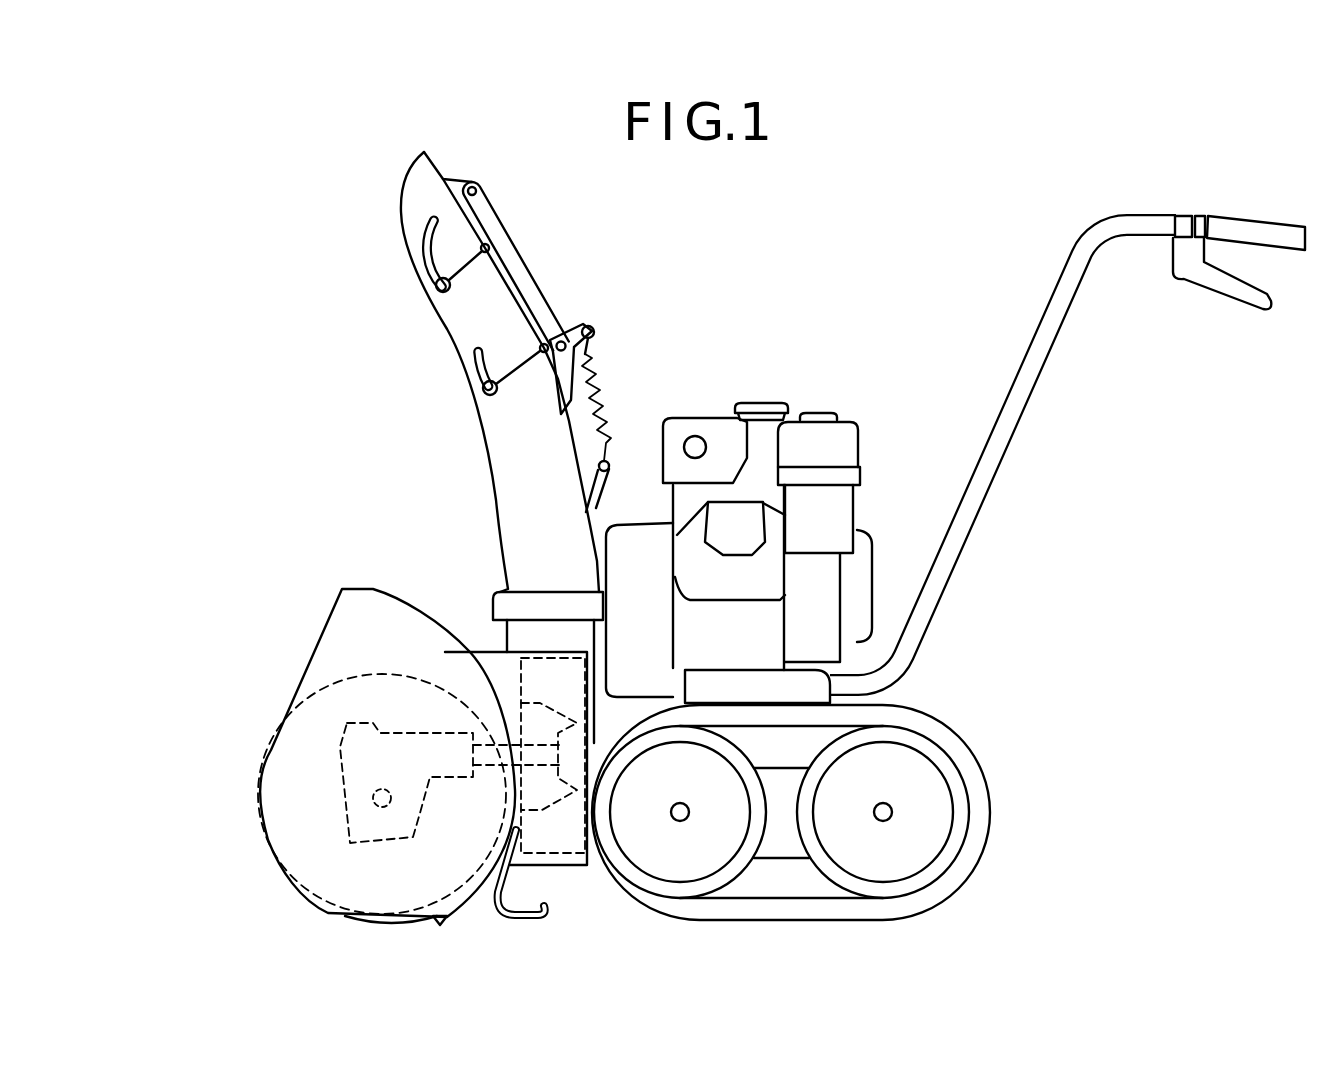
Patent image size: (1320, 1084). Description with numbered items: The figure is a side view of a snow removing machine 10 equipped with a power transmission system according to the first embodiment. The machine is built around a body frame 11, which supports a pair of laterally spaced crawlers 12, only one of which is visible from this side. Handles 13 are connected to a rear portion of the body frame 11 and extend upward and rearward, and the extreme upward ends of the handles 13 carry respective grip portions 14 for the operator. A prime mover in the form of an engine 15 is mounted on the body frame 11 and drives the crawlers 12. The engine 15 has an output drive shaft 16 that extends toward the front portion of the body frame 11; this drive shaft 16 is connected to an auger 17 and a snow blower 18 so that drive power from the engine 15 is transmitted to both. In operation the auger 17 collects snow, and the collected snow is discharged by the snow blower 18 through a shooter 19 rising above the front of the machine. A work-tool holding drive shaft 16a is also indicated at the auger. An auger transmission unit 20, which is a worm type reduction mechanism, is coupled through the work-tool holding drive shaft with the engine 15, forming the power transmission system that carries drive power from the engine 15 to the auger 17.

The snow removing machine 10 is at (898, 265).
The body frame 11 is at (750, 683).
The crawlers 12 is at (990, 782).
The handles 13 is at (1021, 419).
The grip portions 14 is at (1240, 217).
The engine 15 is at (772, 403).
The output drive shaft 16 is at (522, 747).
The work-tool holding drive shaft 16a is at (373, 793).
The auger 17 is at (325, 700).
The snow blower 18 is at (540, 660).
The shooter 19 is at (481, 441).
The auger transmission unit 20 is at (347, 825).